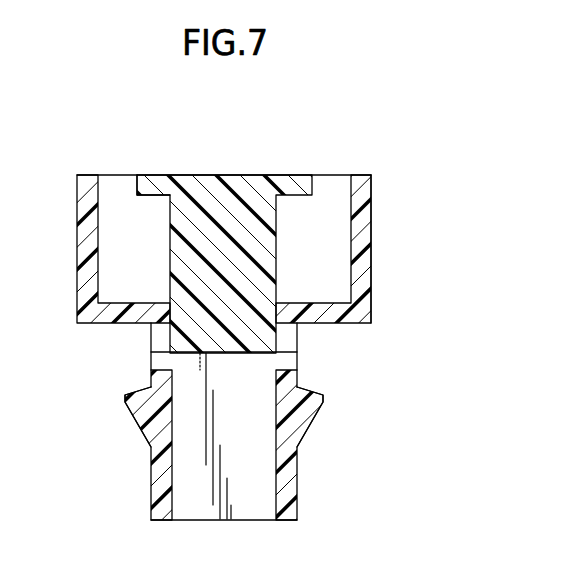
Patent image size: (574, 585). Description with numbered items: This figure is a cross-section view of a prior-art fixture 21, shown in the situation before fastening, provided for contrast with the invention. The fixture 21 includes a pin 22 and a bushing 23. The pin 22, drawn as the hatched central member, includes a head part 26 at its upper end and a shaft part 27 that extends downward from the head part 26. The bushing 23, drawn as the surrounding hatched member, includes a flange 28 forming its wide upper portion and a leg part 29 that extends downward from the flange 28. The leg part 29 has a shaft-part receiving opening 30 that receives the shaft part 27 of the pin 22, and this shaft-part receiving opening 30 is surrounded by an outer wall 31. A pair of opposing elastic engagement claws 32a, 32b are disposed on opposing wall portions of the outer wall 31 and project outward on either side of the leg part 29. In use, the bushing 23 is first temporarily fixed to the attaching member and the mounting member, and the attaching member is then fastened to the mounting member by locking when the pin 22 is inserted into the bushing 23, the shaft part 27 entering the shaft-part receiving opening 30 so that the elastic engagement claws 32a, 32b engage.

The fixture 21 is at (393, 140).
The pin 22 is at (252, 172).
The bushing 23 is at (375, 275).
The head part 26 is at (163, 176).
The shaft part 27 is at (278, 238).
The flange 28 is at (372, 203).
The leg part 29 is at (150, 500).
The shaft-part receiving opening 30 is at (281, 482).
The outer wall 31 is at (298, 475).
The elastic engagement claw 32a is at (133, 395).
The elastic engagement claw 32b is at (313, 392).